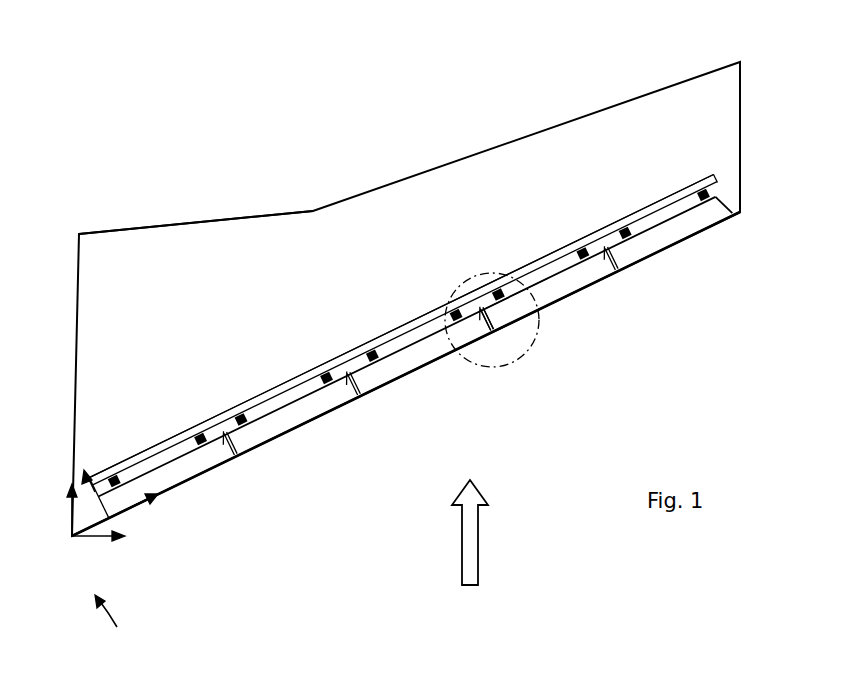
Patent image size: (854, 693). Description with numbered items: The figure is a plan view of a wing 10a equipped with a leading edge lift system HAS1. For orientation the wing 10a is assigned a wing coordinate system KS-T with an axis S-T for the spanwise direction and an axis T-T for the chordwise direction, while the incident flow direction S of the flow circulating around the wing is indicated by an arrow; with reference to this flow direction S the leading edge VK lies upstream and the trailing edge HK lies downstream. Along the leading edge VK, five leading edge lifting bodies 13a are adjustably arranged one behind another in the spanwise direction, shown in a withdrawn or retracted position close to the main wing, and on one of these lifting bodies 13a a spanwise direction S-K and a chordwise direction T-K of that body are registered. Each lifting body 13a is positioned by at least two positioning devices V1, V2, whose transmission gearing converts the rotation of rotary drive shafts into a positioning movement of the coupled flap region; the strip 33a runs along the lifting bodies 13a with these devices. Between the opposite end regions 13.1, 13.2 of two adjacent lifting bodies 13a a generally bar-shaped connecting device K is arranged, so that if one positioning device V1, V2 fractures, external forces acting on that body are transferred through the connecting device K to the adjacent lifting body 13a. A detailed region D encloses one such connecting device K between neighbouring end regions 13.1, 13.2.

The wing 10a is at (500, 167).
The trailing edge HK is at (397, 183).
The leading edge VK is at (741, 210).
The leading edge lift system HAS1 is at (636, 194).
The conductor strip 33a is at (303, 380).
The leading edge lifting body 13a is at (533, 283).
The connecting device K is at (362, 397).
The positioning device V1 is at (115, 478).
The positioning device V2 is at (195, 440).
The detailed region D is at (467, 368).
The end region 13.1 is at (483, 315).
The end region 13.2 is at (497, 313).
The chordwise direction axis T-T is at (65, 513).
The spanwise direction axis S-T is at (97, 543).
The chordwise direction of the leading edge lifting body T-K is at (90, 490).
The spanwise direction of the leading edge lifting body S-K is at (147, 500).
The wing coordinate system KS-T is at (125, 627).
The incident flow direction S is at (480, 532).